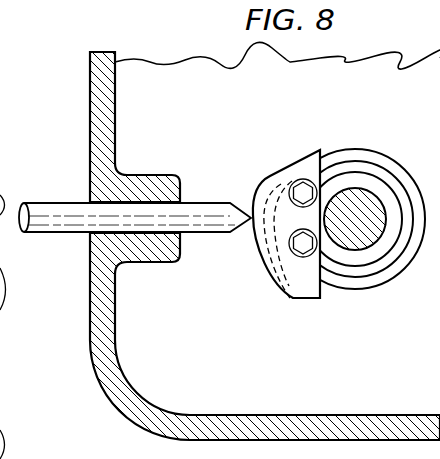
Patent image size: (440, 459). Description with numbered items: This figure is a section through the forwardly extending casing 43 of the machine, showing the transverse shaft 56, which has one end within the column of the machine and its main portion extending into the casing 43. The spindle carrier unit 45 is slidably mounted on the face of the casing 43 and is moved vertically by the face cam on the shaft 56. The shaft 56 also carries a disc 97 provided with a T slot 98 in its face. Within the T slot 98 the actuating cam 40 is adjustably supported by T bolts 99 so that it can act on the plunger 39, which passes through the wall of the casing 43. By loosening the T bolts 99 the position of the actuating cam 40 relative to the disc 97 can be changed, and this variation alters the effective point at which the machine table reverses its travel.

The plunger 39 is at (224, 187).
The actuating cam 40 is at (291, 288).
The casing 43 is at (153, 426).
The spindle carrier unit 45 is at (12, 264).
The transverse shaft 56 is at (362, 228).
The disc 97 is at (408, 191).
The T slot 98 is at (401, 153).
The T bolts 99 is at (328, 180).